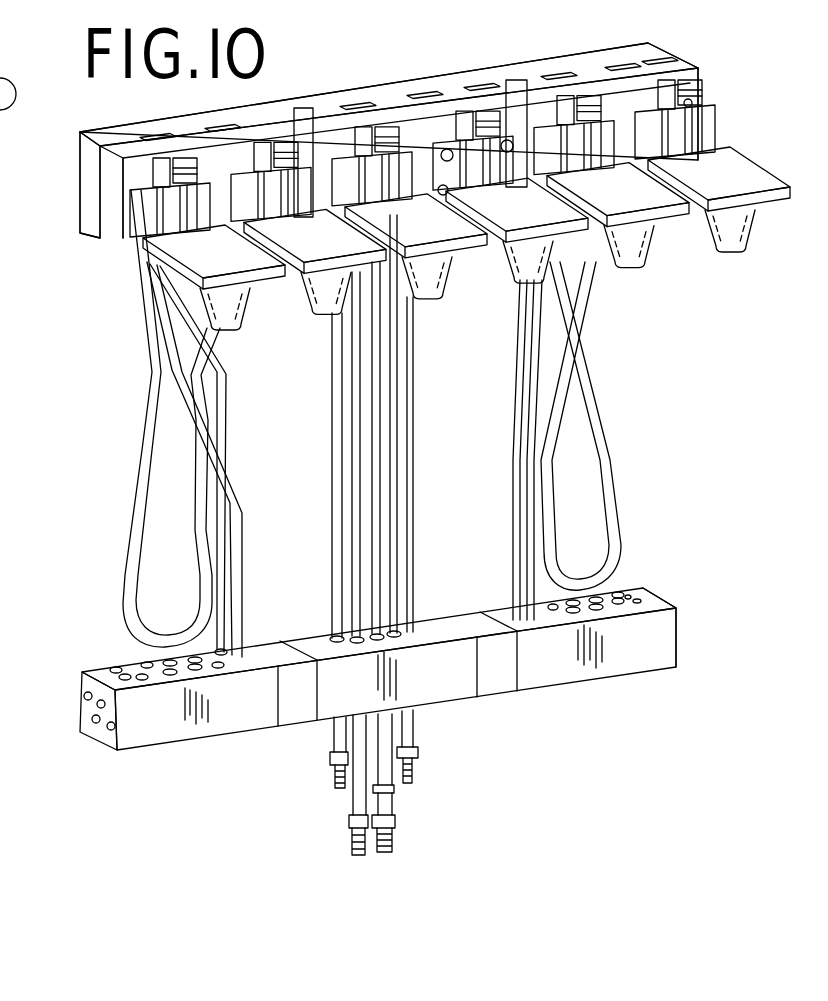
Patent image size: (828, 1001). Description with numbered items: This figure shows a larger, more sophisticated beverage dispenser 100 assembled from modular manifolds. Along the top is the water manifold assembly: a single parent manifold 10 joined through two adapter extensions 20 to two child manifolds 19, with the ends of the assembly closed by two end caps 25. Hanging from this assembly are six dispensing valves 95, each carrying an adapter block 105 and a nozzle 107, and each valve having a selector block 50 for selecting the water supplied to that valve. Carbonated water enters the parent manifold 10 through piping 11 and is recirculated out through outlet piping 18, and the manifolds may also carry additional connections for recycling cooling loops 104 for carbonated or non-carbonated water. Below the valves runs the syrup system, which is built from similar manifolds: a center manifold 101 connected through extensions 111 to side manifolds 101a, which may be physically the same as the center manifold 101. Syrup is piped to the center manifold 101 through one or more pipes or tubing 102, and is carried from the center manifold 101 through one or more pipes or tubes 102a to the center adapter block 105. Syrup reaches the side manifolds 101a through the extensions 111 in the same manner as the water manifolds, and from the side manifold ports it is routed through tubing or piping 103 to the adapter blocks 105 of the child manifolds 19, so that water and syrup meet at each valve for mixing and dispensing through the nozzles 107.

The parent manifold 10 is at (383, 95).
The piping 11 is at (353, 843).
The outlet piping 18 is at (393, 835).
The child manifold 19 is at (200, 112).
The adapter extension 20 is at (280, 77).
The end cap 25 is at (88, 170).
The selector block 50 is at (140, 140).
The dispensing valve 95 is at (147, 227).
The beverage dispenser 100 is at (52, 448).
The center manifold 101 is at (453, 690).
The side manifold 101a is at (167, 733).
The pipes or tubing 102 is at (333, 783).
The pipes or tubes 102a is at (332, 460).
The tubing or piping 103 is at (243, 568).
The recycling cooling loop 104 is at (127, 567).
The adapter block 105 is at (690, 103).
The nozzle 107 is at (233, 310).
The extension 111 is at (297, 720).